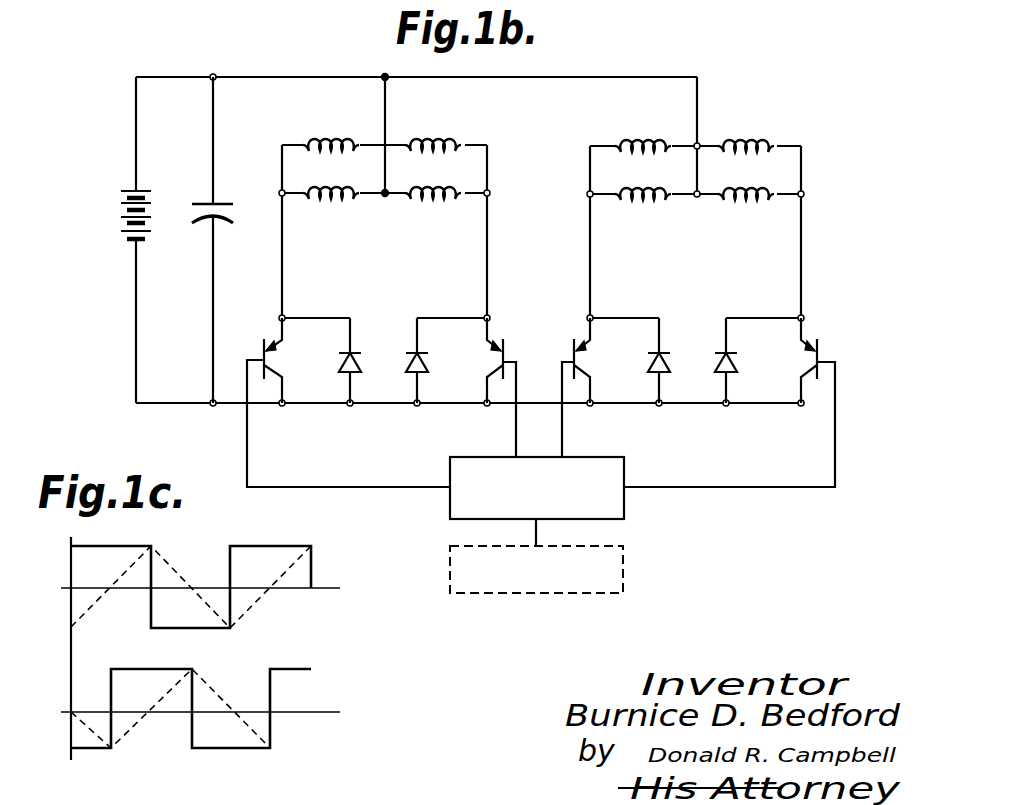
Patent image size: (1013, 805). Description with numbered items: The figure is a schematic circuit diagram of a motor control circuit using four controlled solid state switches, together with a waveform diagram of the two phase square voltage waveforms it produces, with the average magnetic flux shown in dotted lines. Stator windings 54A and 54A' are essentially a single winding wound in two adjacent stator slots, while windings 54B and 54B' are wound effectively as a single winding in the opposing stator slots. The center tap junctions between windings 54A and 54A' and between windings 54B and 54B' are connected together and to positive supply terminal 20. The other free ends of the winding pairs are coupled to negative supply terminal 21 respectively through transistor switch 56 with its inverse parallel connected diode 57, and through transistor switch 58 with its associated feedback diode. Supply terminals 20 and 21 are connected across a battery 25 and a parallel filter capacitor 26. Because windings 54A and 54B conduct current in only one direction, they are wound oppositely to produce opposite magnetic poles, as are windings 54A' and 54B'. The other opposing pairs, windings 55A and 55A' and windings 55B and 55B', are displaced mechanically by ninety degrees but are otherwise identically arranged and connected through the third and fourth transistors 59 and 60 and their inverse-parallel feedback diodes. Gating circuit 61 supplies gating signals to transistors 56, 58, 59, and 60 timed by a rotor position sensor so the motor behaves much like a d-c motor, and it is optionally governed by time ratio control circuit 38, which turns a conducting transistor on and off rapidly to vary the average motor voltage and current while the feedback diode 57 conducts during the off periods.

In FIG. 1B, the positive supply terminal 20 is at (246, 76).
In FIG. 1B, the negative supply terminal 21 is at (226, 404).
In FIG. 1B, the battery 25 is at (130, 190).
In FIG. 1B, the filter capacitor 26 is at (205, 204).
In FIG. 1B, the stator winding 54A is at (331, 129).
In FIG. 1C, the stator winding 54A is at (164, 583).
In FIG. 1B, the stator winding 54A' is at (435, 129).
In FIG. 1B, the stator winding 54B is at (331, 215).
In FIG. 1B, the stator winding 54B' is at (433, 215).
In FIG. 1B, the stator winding 55A is at (643, 129).
In FIG. 1C, the stator winding 55A is at (164, 704).
In FIG. 1B, the stator winding 55A' is at (750, 129).
In FIG. 1B, the stator winding 55B is at (643, 215).
In FIG. 1B, the stator winding 55B' is at (746, 215).
In FIG. 1B, the transistor switch 56 is at (271, 349).
In FIG. 1B, the diode 57 is at (348, 356).
In FIG. 1B, the transistor switch 58 is at (500, 349).
In FIG. 1B, the transistor 59 is at (580, 349).
In FIG. 1B, the transistor 60 is at (818, 349).
In FIG. 1B, the gating circuit 61 is at (612, 458).
In FIG. 1B, the time ratio control circuit 38 is at (622, 562).